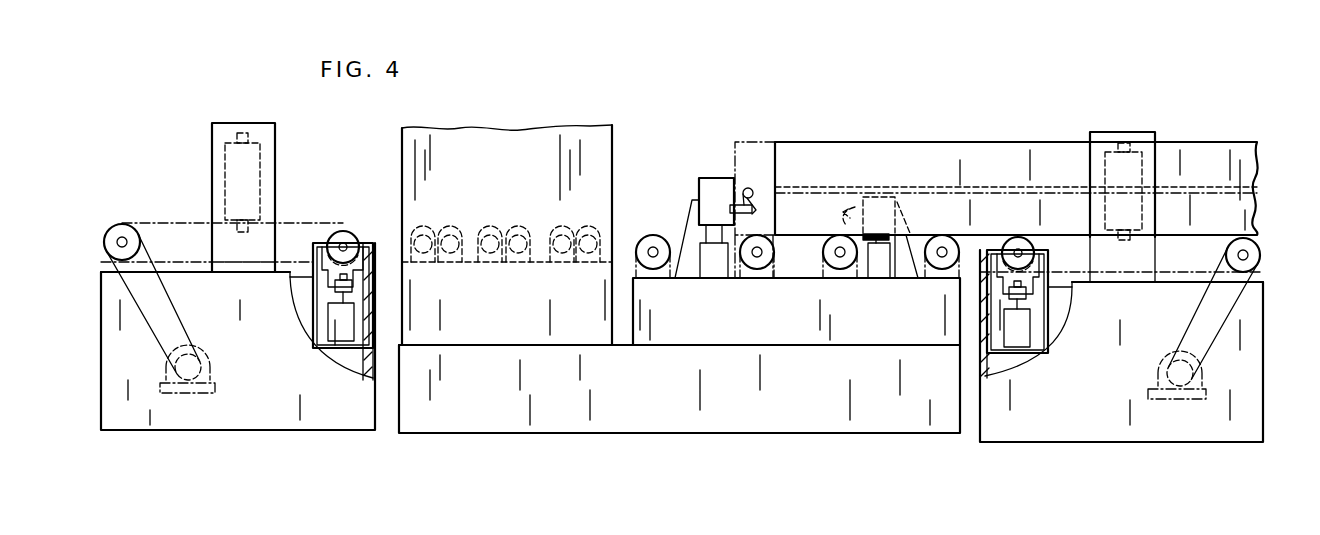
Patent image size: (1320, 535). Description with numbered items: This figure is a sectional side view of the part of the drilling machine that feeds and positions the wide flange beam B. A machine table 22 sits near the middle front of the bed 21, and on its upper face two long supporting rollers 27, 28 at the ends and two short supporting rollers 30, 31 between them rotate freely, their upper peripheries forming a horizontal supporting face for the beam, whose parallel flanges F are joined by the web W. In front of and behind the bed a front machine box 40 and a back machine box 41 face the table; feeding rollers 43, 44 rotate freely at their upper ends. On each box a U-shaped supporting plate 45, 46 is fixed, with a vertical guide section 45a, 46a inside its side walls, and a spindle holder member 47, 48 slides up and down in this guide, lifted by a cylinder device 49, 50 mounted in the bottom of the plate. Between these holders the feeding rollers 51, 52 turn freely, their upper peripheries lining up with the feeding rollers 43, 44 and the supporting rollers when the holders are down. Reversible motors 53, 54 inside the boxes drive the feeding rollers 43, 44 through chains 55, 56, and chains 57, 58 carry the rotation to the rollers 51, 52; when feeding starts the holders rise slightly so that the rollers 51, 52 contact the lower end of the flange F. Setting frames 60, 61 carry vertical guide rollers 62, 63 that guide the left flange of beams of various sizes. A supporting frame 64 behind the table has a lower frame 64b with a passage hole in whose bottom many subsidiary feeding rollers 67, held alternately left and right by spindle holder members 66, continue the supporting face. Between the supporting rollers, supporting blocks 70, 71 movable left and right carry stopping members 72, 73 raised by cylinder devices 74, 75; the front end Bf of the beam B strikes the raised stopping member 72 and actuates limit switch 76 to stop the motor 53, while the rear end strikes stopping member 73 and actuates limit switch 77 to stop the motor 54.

The bed 21 is at (693, 434).
The machine table 22 is at (693, 345).
The supporting roller 27 is at (942, 270).
The supporting roller 28 is at (655, 270).
The supporting roller 30 is at (840, 270).
The supporting roller 31 is at (757, 270).
The front machine box 40 is at (1264, 304).
The back machine box 41 is at (102, 292).
The feeding roller 43 is at (1262, 255).
The feeding roller 44 is at (104, 242).
The supporting plate 45 is at (1048, 333).
The guide section 45a is at (1074, 286).
The supporting plate 46 is at (313, 326).
The guide section 46a is at (312, 280).
The spindle holder member 47 is at (1010, 243).
The spindle holder member 48 is at (331, 238).
The cylinder device 49 is at (1035, 369).
The cylinder device 50 is at (340, 346).
The feeding roller 51 is at (1030, 241).
The feeding roller 52 is at (350, 235).
The motor 53 is at (1198, 368).
The motor 54 is at (172, 374).
The chain 55 is at (1230, 318).
The chain 56 is at (136, 306).
The chain 57 is at (1135, 278).
The chain 58 is at (222, 265).
The setting frame 60 is at (1138, 133).
The setting frame 61 is at (267, 133).
The guide roller 62 is at (1120, 143).
The guide roller 63 is at (238, 135).
The supporting frame 64 is at (578, 133).
The lower frame 64b is at (523, 133).
The spindle holder member 66 is at (463, 262).
The subsidiary feeding roller 67 is at (437, 235).
The supporting block 70 is at (681, 272).
The supporting block 71 is at (911, 272).
The stopping member 72 is at (730, 180).
The stopping member 73 is at (881, 197).
The cylinder device 74 is at (714, 272).
The cylinder device 75 is at (878, 272).
The limit switch 76 is at (748, 188).
The limit switch 77 is at (853, 205).
The wide flange beam B is at (885, 142).
The front end of the wide flange beam Bf is at (776, 143).
The flange F is at (825, 142).
The web W is at (935, 188).